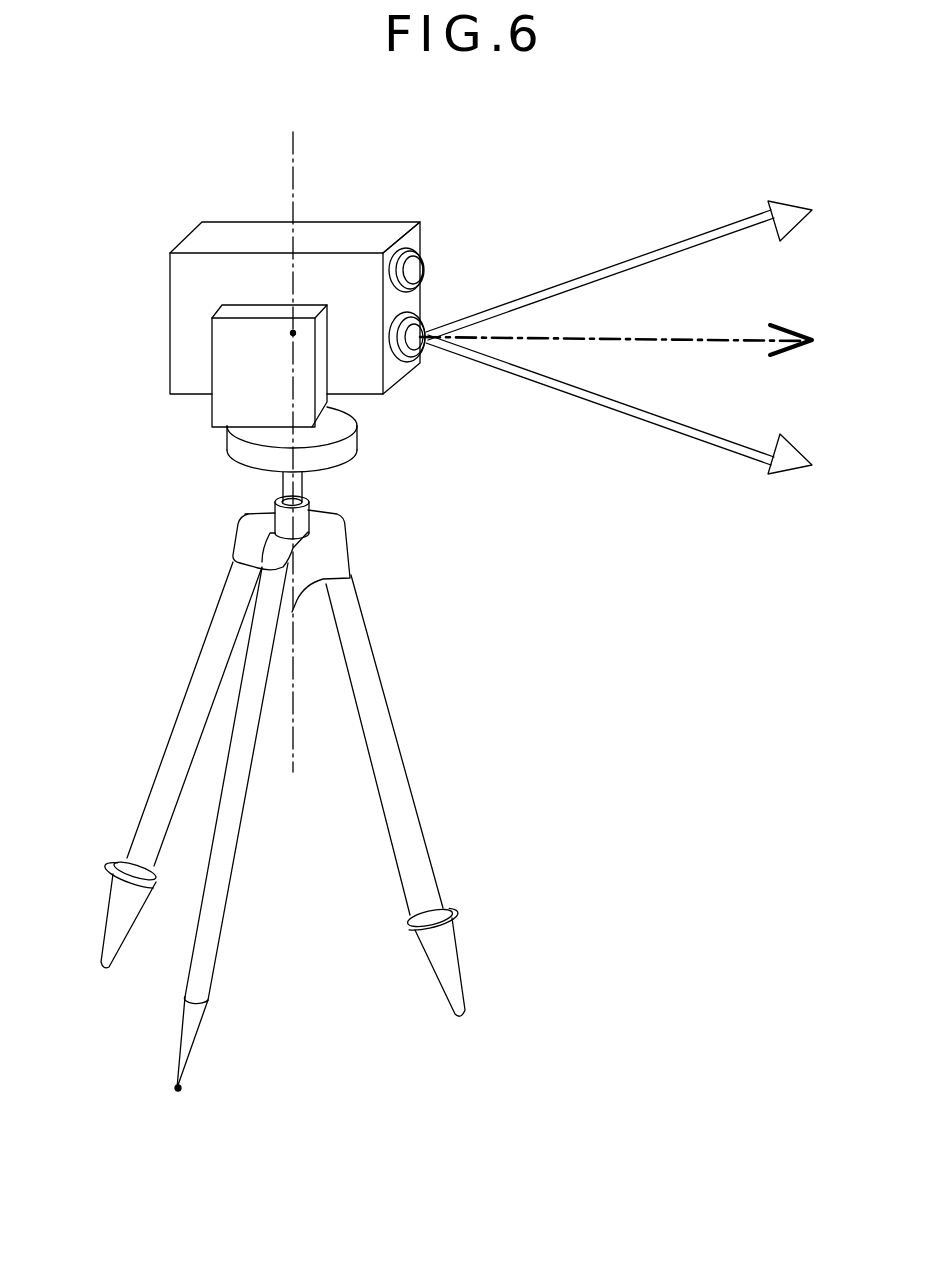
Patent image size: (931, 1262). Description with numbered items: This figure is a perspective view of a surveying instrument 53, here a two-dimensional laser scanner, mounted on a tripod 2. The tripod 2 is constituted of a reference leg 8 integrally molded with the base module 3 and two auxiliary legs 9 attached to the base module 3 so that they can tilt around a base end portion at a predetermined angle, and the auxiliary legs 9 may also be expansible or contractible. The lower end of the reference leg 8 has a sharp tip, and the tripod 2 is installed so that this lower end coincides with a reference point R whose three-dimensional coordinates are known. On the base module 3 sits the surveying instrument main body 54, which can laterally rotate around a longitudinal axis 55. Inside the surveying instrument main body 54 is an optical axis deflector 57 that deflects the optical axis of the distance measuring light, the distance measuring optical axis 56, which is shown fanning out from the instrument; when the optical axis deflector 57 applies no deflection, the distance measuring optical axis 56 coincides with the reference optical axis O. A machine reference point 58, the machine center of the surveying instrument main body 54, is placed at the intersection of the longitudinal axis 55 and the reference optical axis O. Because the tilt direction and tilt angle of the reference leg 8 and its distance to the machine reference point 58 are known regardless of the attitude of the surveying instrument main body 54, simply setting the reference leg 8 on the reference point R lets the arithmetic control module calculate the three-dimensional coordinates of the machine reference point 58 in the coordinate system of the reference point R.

The tripod 2 is at (385, 690).
The base module 3 is at (345, 546).
The reference leg 8 is at (222, 810).
The auxiliary legs 9 is at (180, 718).
The surveying instrument 53 is at (150, 400).
The surveying instrument main body 54 is at (354, 221).
The longitudinal axis 55 is at (293, 167).
The distance measuring optical axis 56 is at (601, 268).
The optical axis deflector 57 is at (425, 352).
The machine reference point 58 is at (293, 333).
The reference optical axis O is at (635, 338).
The reference point R is at (182, 1088).